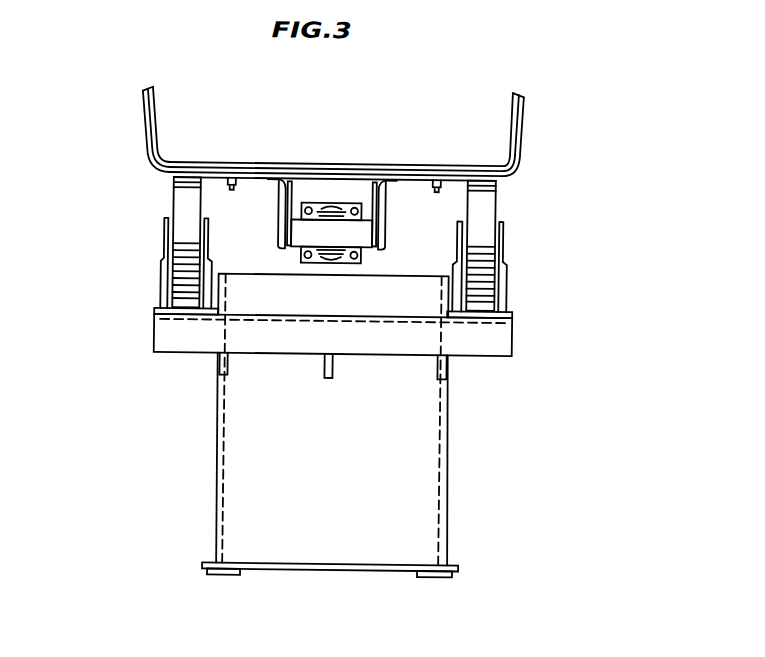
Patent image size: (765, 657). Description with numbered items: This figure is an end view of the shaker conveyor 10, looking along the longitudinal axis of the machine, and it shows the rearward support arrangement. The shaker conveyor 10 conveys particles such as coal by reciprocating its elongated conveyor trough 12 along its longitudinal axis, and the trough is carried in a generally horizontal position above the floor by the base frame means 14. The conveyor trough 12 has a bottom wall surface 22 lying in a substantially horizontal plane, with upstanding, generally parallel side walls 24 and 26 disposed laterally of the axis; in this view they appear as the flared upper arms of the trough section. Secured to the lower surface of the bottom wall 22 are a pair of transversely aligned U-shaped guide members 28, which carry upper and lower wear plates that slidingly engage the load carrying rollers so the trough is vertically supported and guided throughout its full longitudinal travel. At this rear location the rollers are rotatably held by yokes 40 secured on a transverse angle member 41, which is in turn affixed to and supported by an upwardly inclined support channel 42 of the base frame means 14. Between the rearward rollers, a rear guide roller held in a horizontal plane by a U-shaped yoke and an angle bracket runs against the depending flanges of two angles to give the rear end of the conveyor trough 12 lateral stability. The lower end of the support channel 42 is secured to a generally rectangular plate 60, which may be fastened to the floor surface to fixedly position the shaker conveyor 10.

The shaker conveyor 10 is at (594, 207).
The conveyor trough 12 is at (137, 183).
The base frame means 14 is at (198, 481).
The bottom wall surface 22 is at (326, 165).
The side wall 24 is at (154, 101).
The side wall 26 is at (506, 127).
The U-shaped guide member 28 is at (181, 208).
The yoke 40 is at (162, 297).
The transverse angle member 41 is at (505, 341).
The upwardly inclined support channel 42 is at (424, 471).
The rectangular plate 60 is at (306, 570).